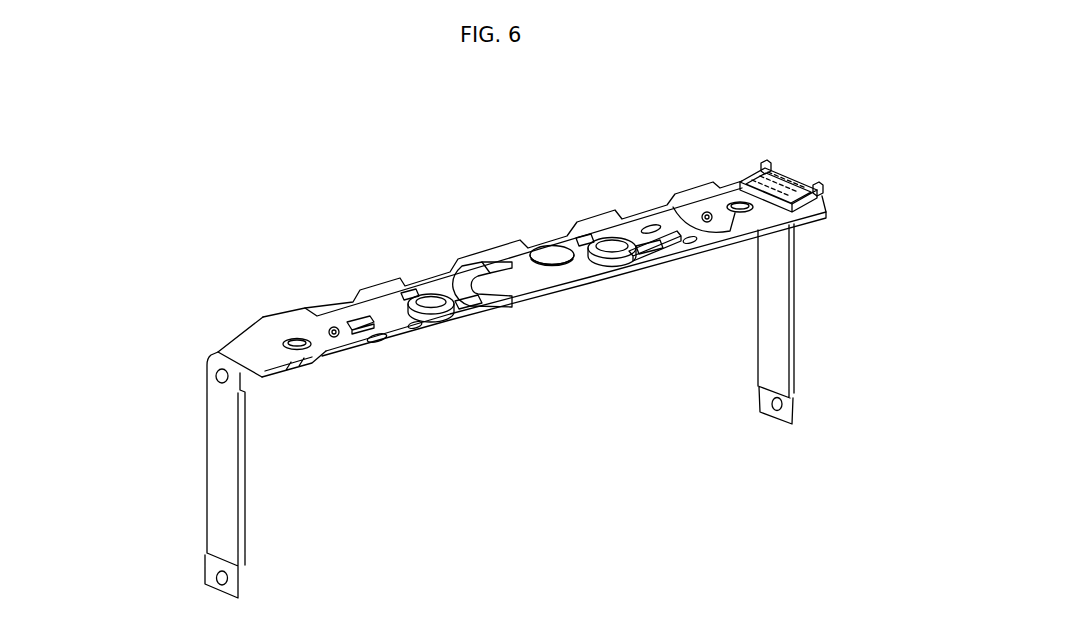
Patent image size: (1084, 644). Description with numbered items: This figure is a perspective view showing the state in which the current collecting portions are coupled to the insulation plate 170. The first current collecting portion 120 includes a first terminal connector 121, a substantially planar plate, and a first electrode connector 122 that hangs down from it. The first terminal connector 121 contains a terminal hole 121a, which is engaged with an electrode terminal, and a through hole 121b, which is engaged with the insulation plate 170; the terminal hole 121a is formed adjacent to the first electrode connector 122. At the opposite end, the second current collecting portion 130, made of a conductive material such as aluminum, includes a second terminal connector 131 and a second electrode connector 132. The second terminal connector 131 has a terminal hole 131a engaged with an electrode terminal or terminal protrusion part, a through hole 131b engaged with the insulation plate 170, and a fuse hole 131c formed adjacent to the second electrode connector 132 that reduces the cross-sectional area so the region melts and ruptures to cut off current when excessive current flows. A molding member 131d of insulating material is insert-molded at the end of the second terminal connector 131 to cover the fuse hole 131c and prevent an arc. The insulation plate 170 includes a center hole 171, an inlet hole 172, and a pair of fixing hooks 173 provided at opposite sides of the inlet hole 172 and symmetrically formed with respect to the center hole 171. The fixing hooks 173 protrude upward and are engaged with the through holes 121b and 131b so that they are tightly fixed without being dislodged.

The first current collecting portion 120 is at (210, 421).
The first terminal connector 121 is at (245, 338).
The terminal hole 121a is at (312, 338).
The through hole 121b is at (352, 342).
The first electrode connector 122 is at (217, 435).
The second current collecting portion 130 is at (819, 259).
The second terminal connector 131 is at (784, 206).
The terminal hole 131a is at (742, 202).
The through hole 131b is at (713, 217).
The fuse hole 131c is at (783, 172).
The molding member 131d is at (777, 186).
The second electrode connector 132 is at (780, 306).
The insulation plate 170 is at (378, 273).
The center hole 171 is at (557, 270).
The inlet hole 172 is at (463, 263).
The fixing hook 173 is at (334, 328).